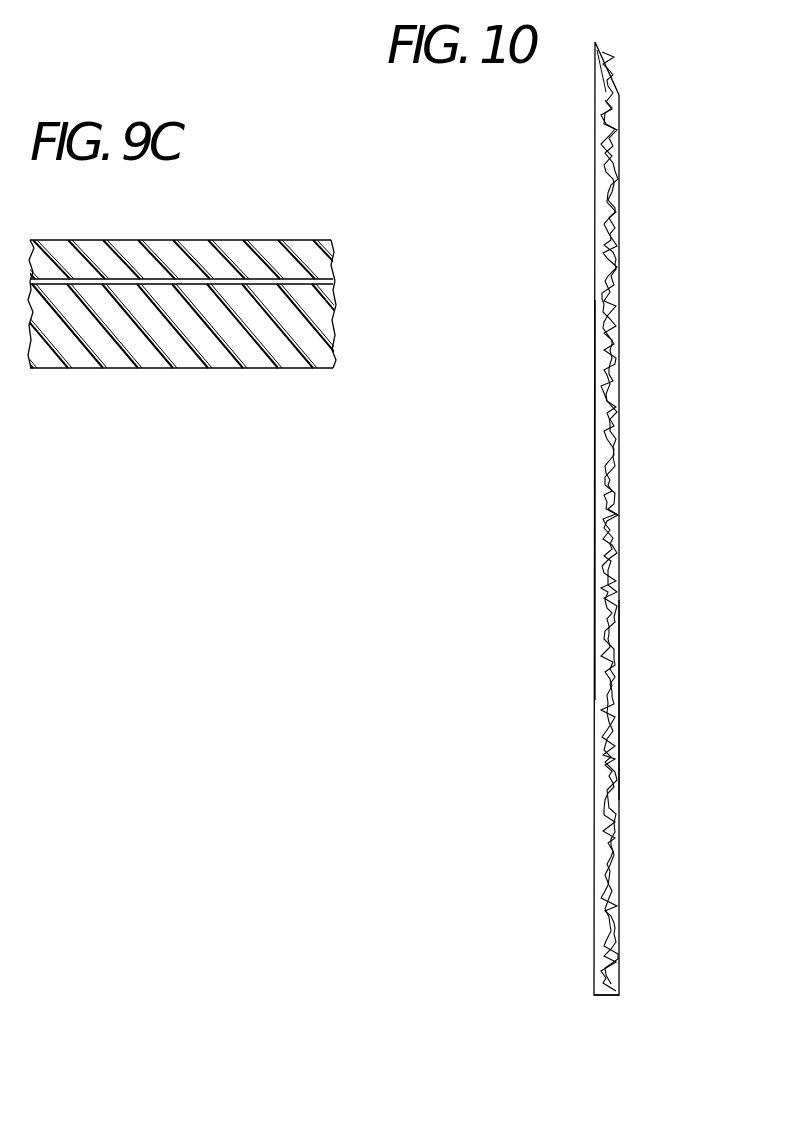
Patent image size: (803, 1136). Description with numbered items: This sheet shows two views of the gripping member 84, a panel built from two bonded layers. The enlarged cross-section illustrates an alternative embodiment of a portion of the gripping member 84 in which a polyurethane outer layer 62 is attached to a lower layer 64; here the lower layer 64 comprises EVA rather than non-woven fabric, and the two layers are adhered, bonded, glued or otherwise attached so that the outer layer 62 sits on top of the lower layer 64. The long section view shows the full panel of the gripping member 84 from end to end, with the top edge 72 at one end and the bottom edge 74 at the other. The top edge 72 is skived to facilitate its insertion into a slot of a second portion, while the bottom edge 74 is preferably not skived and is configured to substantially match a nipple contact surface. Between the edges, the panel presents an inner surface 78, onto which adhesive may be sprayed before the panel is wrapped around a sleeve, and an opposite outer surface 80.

In FIG. 9C, the outer layer 62 is at (313, 249).
In FIG. 9C, the inner layer 64 is at (320, 312).
In FIG. 10, the top edge 72 is at (646, 60).
In FIG. 10, the bottom edge 74 is at (652, 987).
In FIG. 10, the inner surface 78 is at (620, 418).
In FIG. 10, the outer surface 80 is at (597, 455).
In FIG. 10, the gripping member 84 is at (558, 694).